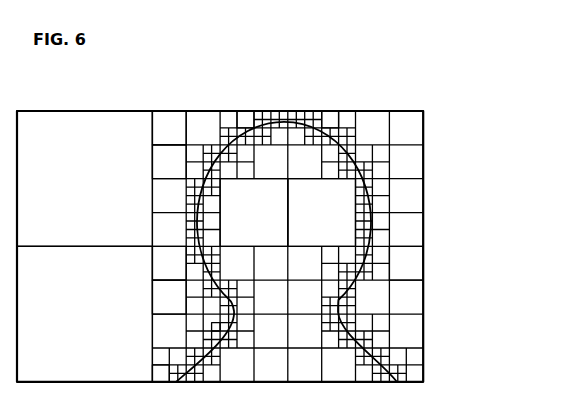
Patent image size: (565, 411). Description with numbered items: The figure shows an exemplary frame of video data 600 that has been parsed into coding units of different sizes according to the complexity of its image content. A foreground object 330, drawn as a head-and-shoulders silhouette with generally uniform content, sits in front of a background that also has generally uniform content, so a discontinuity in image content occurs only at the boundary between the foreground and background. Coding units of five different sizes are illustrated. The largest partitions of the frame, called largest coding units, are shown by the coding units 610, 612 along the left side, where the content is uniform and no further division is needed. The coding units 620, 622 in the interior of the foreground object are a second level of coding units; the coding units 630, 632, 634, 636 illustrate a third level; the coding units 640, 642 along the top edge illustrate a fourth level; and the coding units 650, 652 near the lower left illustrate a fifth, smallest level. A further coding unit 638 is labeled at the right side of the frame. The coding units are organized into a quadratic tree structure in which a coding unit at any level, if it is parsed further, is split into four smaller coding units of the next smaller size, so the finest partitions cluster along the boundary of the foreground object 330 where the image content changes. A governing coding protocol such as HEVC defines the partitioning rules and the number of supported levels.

The picture / coding tree block partition 600 is at (102, 68).
The object (head and shoulders) in picture 330 is at (457, 128).
The largest coding unit 610 is at (50, 239).
The largest coding unit 612 is at (50, 373).
The second level coding unit 620 is at (265, 230).
The second level coding unit 622 is at (333, 230).
The third level coding unit 630 is at (150, 128).
The third level coding unit 632 is at (150, 162).
The third level coding unit 634 is at (150, 262).
The third level coding unit 636 is at (150, 297).
The coding unit 638 is at (425, 264).
The fourth level coding unit 640 is at (247, 110).
The fourth level coding unit 642 is at (328, 110).
The fifth level coding unit 650 is at (215, 326).
The fifth level coding unit 652 is at (162, 366).